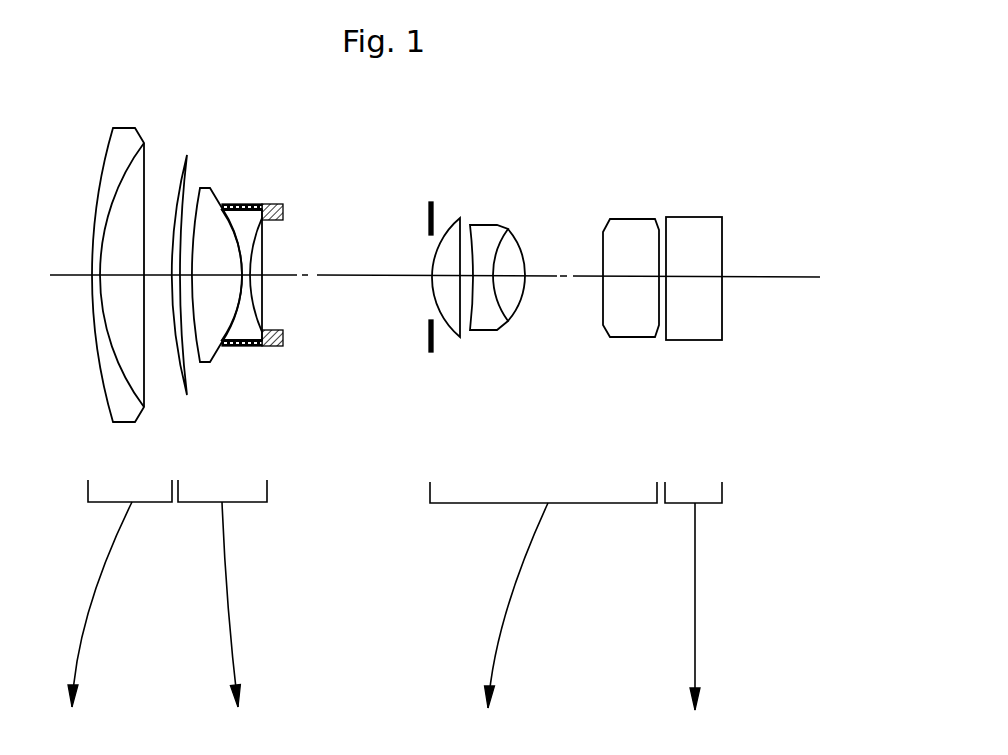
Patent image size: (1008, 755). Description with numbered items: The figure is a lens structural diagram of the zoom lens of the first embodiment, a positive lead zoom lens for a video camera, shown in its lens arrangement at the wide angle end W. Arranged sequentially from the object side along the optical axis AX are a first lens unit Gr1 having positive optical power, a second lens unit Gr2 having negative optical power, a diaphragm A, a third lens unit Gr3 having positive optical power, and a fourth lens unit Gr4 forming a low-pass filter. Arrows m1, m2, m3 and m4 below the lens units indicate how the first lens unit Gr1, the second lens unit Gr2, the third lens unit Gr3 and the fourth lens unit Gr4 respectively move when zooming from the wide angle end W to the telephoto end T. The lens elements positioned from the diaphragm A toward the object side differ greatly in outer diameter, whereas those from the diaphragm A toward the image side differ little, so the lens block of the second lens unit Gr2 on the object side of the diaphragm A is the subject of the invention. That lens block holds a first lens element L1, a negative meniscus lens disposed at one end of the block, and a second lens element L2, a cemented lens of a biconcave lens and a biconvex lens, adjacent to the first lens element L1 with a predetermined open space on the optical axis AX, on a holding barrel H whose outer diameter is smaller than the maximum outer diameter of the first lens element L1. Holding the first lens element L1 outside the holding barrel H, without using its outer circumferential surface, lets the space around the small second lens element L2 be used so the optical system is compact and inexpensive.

The first lens unit Gr1 is at (137, 333).
The second lens unit Gr2 is at (257, 328).
The third lens unit Gr3 is at (543, 379).
The fourth lens unit Gr4 is at (675, 379).
The first lens element L1 is at (206, 197).
The second lens element L2 is at (244, 214).
The holding barrel H is at (273, 205).
The diaphragm A is at (430, 212).
The optical axis AX is at (805, 280).
The arrow indicating movement of the first lens unit m1 is at (89, 612).
The arrow indicating movement of the second lens unit m2 is at (230, 613).
The arrow indicating movement of the third lens unit m3 is at (506, 612).
The arrow indicating movement of the fourth lens unit m4 is at (695, 615).
The wide angle end W is at (902, 493).
The telephoto end T is at (896, 703).